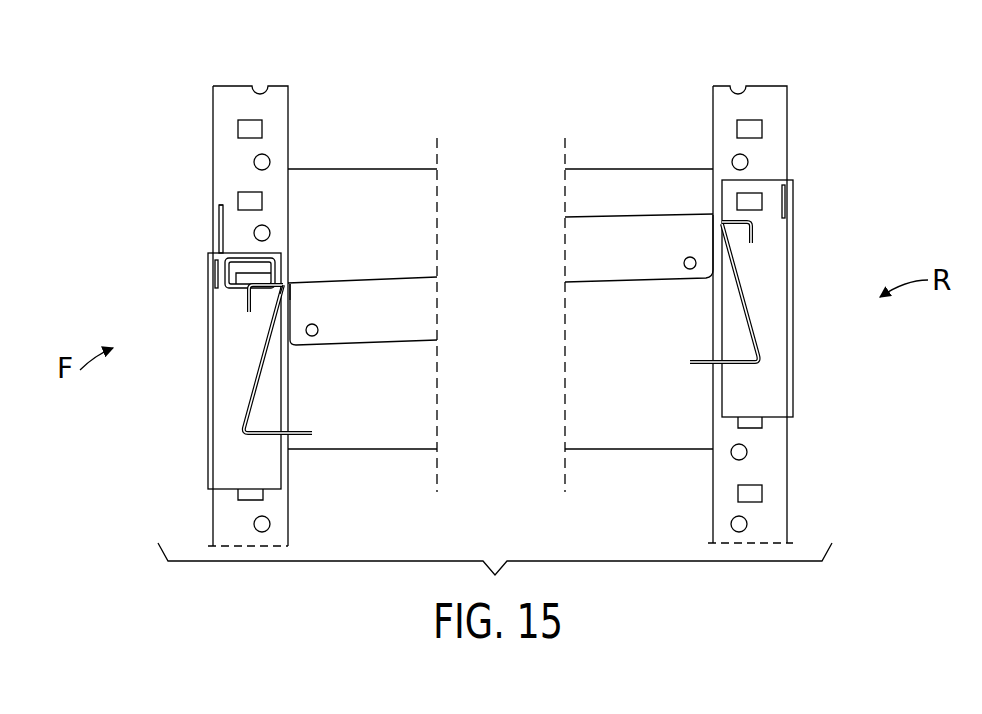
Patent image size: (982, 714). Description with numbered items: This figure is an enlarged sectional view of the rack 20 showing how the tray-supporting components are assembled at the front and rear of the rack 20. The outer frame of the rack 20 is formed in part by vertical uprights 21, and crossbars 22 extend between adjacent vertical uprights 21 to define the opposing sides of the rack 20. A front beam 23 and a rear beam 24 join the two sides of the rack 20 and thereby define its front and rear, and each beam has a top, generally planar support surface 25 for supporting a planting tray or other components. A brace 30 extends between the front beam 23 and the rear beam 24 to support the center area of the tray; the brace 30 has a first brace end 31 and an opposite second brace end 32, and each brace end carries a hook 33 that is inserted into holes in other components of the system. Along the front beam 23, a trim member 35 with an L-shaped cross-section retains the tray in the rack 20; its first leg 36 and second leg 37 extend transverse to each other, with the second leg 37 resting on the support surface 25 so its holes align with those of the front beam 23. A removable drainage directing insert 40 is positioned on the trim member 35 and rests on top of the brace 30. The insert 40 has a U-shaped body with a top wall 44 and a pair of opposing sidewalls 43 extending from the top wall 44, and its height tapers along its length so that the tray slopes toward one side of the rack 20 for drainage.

The rack 20 is at (812, 90).
The vertical uprights 21 is at (212, 153).
The crossbars 22 is at (400, 175).
The front beam 23 is at (255, 378).
The rear beam 24 is at (752, 330).
The support surface 25 is at (213, 290).
The brace 30 is at (408, 278).
The first brace end 31 is at (313, 263).
The second brace end 32 is at (697, 185).
The hook 33 is at (254, 312).
The trim member 35 is at (219, 228).
The first leg 36 is at (223, 207).
The second leg 37 is at (281, 288).
The drainage directing insert 40 is at (263, 256).
The sidewalls 43 is at (215, 276).
The top wall 44 is at (240, 257).